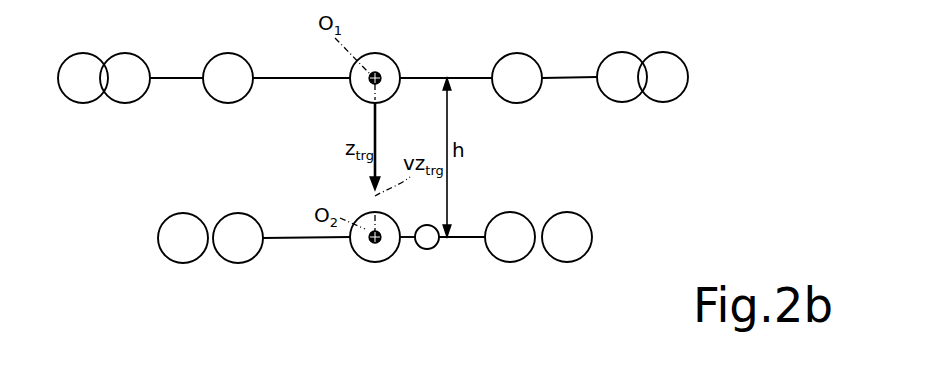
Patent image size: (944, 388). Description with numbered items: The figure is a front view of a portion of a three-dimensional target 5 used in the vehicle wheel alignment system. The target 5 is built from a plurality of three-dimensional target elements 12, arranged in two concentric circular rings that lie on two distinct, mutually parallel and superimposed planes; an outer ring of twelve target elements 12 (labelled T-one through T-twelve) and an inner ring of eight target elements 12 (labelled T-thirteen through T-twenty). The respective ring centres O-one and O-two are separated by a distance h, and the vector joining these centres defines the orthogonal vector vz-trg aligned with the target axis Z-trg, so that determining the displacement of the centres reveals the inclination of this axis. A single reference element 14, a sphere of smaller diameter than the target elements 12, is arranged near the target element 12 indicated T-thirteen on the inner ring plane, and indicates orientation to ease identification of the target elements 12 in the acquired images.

The target 5 is at (600, 174).
The target element 12 is at (126, 100).
The reference element 14 is at (430, 242).